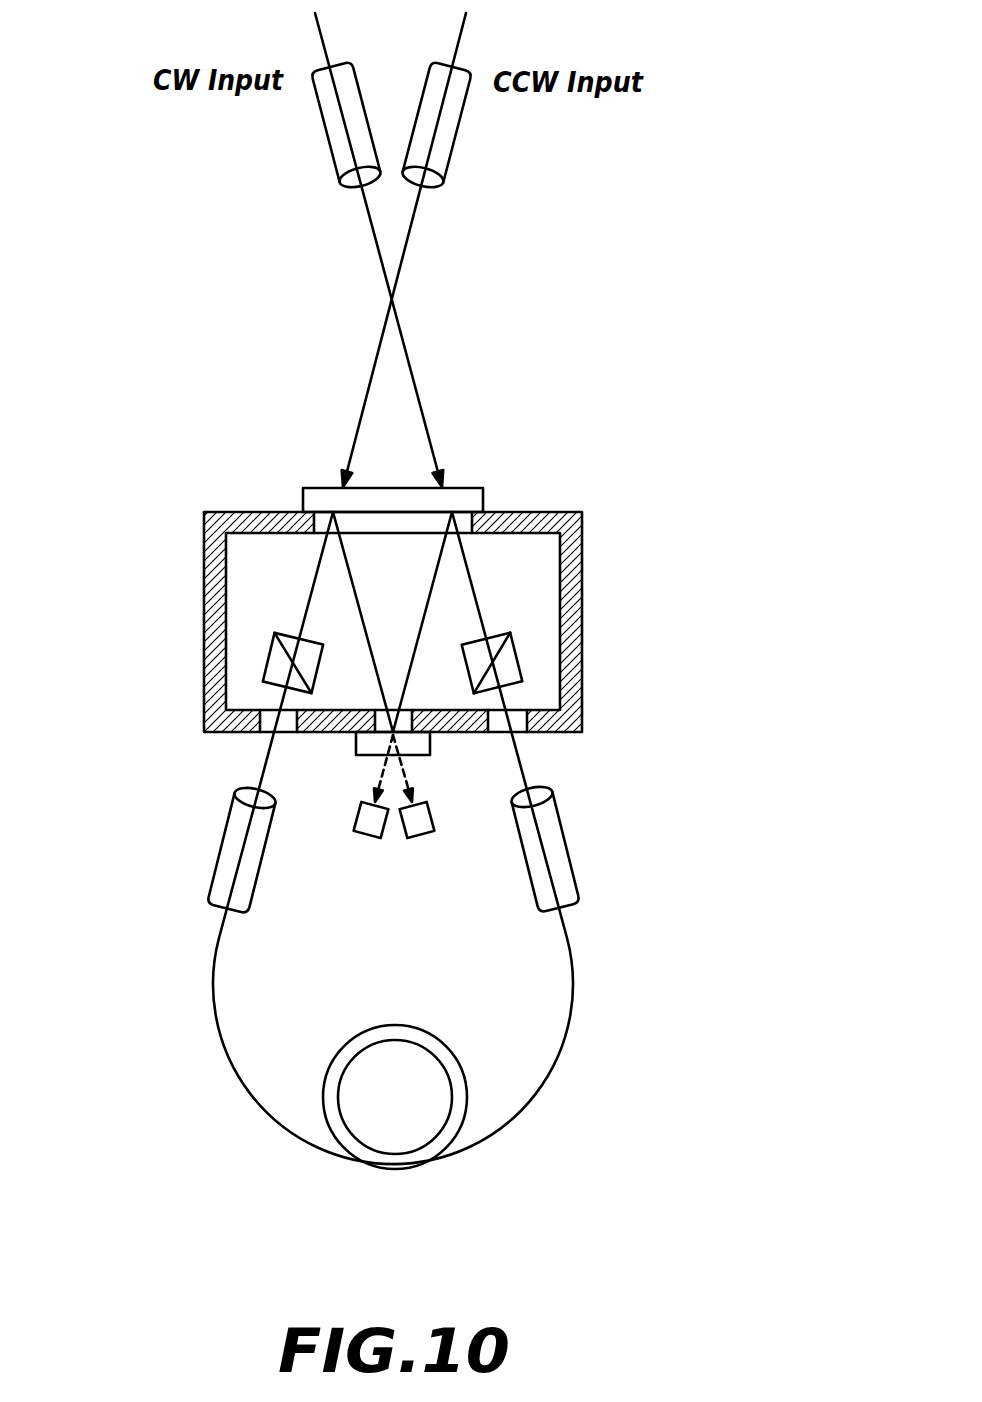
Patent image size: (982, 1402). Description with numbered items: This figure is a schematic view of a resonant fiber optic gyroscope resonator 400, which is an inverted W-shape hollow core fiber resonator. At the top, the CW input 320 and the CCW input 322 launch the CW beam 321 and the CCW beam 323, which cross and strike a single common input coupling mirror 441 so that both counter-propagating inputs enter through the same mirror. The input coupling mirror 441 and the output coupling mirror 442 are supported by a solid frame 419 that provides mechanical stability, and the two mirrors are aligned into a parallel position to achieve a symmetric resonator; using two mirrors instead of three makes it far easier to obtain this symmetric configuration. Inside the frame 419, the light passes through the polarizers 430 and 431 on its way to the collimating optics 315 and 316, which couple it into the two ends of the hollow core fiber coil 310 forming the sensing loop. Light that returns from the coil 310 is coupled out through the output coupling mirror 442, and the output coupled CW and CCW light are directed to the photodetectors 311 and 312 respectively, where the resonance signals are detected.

The hollow core fiber coil 310 is at (375, 1027).
The photodetector 311 is at (432, 827).
The photodetector 312 is at (357, 827).
The collimating optics 315 is at (568, 845).
The collimating optics 316 is at (213, 845).
The CW input 320 is at (323, 128).
The CW beam 321 is at (430, 408).
The CCW input 322 is at (462, 128).
The CCW beam 323 is at (357, 408).
The resonator 400 is at (668, 497).
The solid frame 419 is at (204, 627).
The polarizer 430 is at (493, 634).
The polarizer 431 is at (287, 634).
The input coupling mirror 441 is at (482, 497).
The output coupling mirror 442 is at (423, 755).